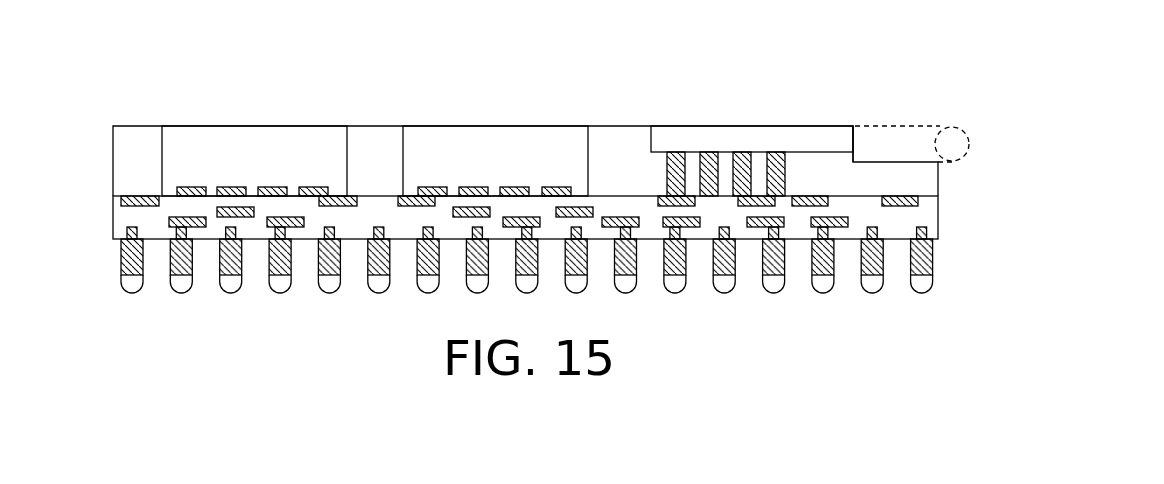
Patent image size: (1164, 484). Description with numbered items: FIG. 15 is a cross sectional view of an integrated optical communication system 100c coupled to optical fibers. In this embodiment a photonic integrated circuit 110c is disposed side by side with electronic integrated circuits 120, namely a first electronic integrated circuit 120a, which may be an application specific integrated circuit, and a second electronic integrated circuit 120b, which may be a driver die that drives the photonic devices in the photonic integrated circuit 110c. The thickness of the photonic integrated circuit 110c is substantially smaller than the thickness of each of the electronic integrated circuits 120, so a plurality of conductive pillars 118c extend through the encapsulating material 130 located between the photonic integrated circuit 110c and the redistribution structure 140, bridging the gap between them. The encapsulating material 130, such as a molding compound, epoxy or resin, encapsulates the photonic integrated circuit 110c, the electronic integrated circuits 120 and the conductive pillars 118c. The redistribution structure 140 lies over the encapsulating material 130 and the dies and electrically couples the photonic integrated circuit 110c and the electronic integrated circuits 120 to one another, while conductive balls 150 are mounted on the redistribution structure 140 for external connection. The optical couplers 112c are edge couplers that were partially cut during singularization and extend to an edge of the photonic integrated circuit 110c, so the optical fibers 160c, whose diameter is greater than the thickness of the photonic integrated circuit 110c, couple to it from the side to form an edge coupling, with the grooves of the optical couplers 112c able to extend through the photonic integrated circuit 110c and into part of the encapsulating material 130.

The integrated optical communication system 100c is at (1017, 72).
The photonic integrated circuit 110c is at (733, 137).
The optical couplers 112c is at (856, 136).
The conductive pillars 118c is at (677, 150).
The electronic integrated circuits 120 is at (375, 123).
The electronic integrated circuit 120a is at (240, 137).
The electronic integrated circuit 120b is at (458, 137).
The encapsulating material 130 is at (932, 180).
The redistribution structure 140 is at (932, 222).
The conductive balls 150 is at (925, 283).
The optical fibers 160c is at (923, 128).